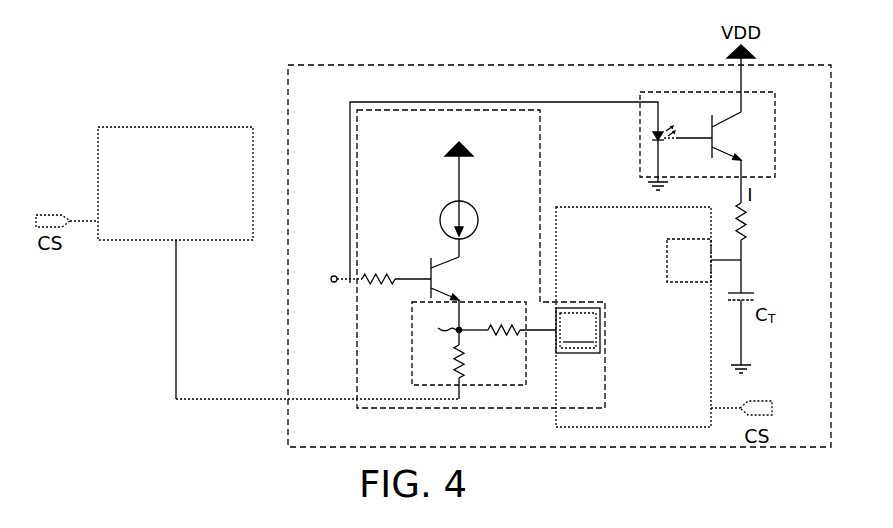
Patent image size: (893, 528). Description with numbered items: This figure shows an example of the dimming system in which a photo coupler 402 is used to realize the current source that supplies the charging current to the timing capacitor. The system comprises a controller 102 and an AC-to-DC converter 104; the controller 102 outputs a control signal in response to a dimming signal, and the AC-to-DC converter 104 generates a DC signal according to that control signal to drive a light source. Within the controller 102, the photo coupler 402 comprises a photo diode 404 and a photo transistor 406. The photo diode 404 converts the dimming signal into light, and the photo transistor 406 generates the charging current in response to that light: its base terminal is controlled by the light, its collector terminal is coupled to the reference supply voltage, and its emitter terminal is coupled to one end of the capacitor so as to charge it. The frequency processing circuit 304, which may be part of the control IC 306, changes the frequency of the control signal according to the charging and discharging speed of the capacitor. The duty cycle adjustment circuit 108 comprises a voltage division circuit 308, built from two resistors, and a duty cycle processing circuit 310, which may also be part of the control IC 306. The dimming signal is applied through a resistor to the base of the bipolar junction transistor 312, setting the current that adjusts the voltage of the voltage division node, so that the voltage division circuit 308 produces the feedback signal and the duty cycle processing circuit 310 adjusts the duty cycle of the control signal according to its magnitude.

The controller 102 is at (500, 64).
The AC-to-DC converter 104 is at (178, 126).
The duty cycle adjustment circuit 108 is at (357, 181).
The control IC 306 is at (606, 207).
The voltage division circuit 308 is at (412, 352).
The duty cycle processing circuit 310 is at (578, 330).
The bipolar junction transistor 312 is at (447, 276).
The frequency processing circuit 304 is at (689, 260).
The photo coupler 402 is at (680, 91).
The photo diode 404 is at (650, 137).
The photo transistor 406 is at (730, 135).